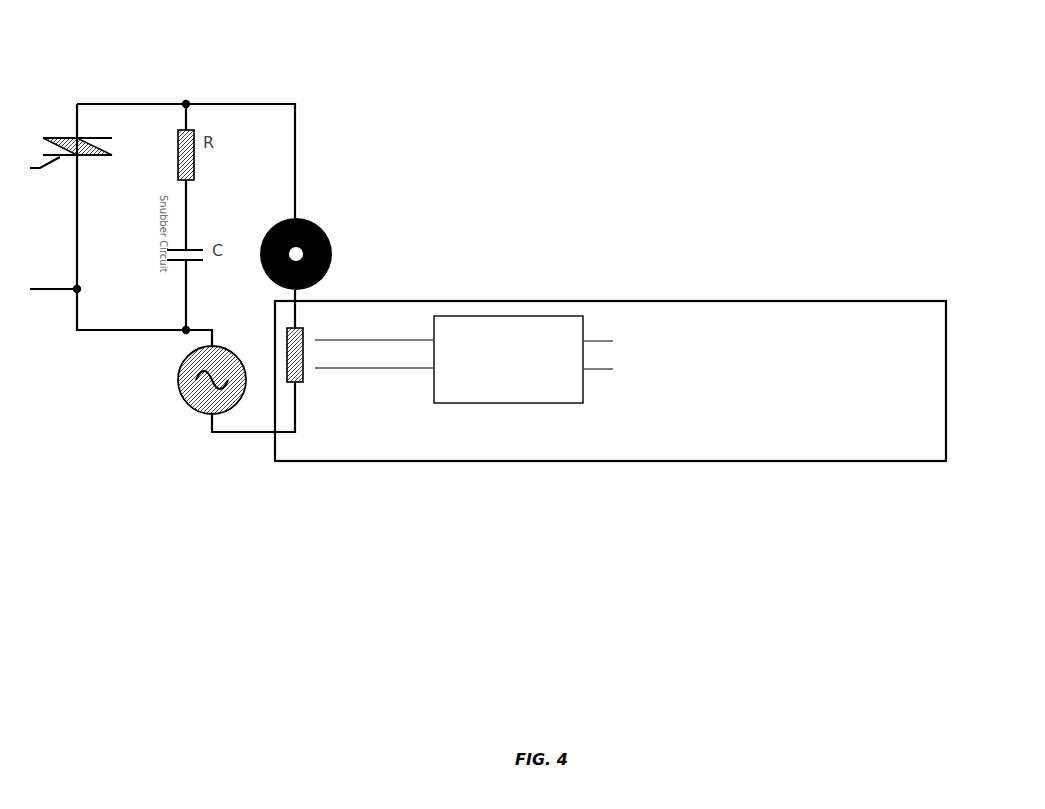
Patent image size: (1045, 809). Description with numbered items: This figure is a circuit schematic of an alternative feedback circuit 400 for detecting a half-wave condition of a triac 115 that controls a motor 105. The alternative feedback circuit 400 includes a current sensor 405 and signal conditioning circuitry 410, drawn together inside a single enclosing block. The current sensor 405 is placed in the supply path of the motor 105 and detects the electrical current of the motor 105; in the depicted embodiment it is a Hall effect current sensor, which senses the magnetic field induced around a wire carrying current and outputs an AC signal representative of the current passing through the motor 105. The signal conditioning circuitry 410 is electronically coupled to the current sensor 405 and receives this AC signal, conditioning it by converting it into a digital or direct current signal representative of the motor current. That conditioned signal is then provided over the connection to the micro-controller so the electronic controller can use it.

The TRIAC 115 is at (47, 135).
The motor 105 is at (318, 228).
The alternative feedback circuit 400 is at (500, 497).
The current sensor 405 is at (315, 320).
The signal conditioning circuitry 410 is at (508, 304).